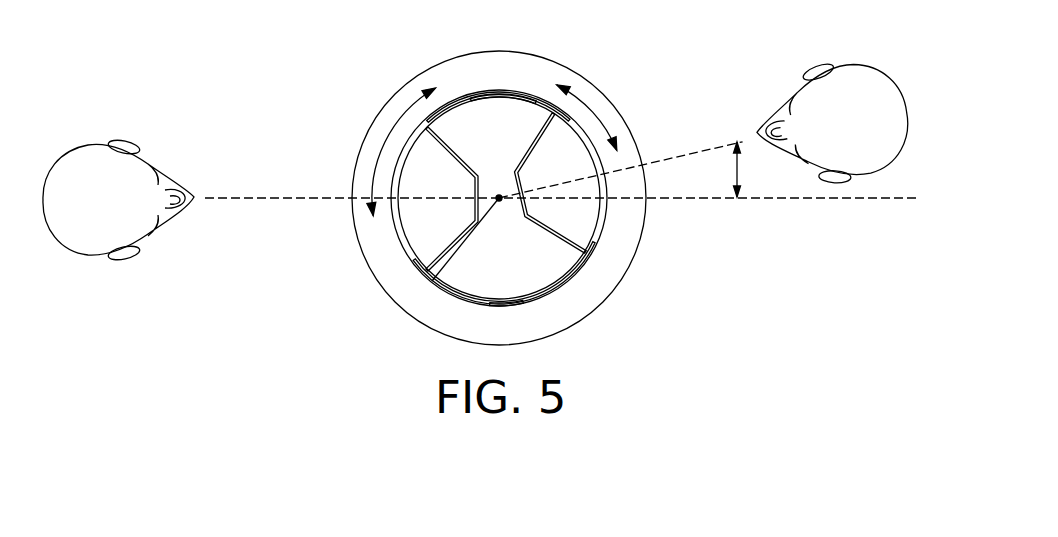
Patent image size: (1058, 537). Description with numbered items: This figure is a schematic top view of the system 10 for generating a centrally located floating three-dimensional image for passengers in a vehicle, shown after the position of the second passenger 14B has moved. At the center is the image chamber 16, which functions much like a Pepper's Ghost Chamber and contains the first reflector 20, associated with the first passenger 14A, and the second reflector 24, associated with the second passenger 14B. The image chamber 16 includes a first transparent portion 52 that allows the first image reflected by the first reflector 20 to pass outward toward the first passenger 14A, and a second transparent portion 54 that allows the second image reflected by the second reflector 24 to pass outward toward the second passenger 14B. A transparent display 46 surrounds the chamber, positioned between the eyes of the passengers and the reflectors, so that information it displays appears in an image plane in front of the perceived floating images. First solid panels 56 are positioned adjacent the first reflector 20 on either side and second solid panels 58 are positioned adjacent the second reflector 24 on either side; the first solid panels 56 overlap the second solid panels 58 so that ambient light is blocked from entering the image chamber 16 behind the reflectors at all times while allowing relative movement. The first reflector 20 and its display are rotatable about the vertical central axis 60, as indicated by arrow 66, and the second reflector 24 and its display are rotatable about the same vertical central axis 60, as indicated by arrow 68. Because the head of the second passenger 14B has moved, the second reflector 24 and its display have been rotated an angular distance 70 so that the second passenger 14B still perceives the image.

The system 10 is at (512, 190).
The first passenger 14A is at (115, 170).
The second passenger 14B is at (832, 88).
The image chamber 16 is at (598, 233).
The first reflector 20 is at (449, 182).
The second reflector 24 is at (570, 165).
The transparent display 46 is at (607, 297).
The first transparent portion 52 is at (397, 230).
The second transparent portion 54 is at (607, 212).
The first solid panels 56 is at (460, 92).
The second solid panels 58 is at (540, 93).
The vertical central axis 60 is at (432, 282).
The arrow 66 is at (383, 142).
The arrow 68 is at (590, 102).
The angular distance 70 is at (738, 172).